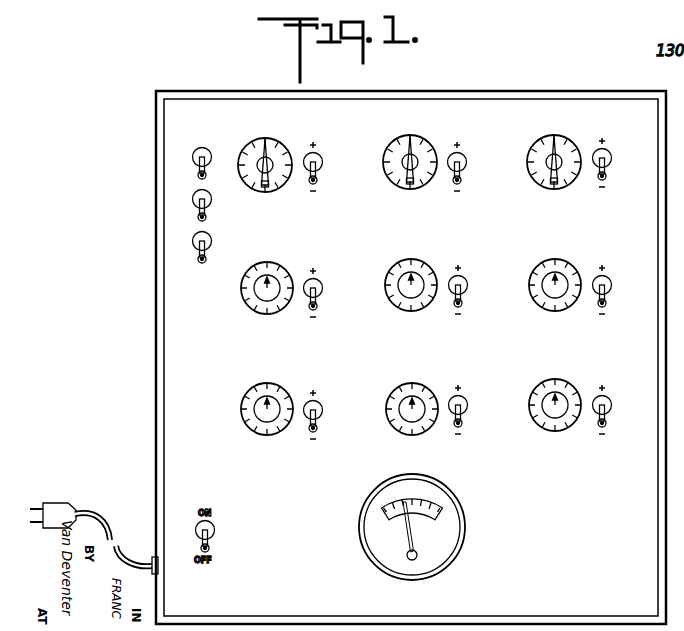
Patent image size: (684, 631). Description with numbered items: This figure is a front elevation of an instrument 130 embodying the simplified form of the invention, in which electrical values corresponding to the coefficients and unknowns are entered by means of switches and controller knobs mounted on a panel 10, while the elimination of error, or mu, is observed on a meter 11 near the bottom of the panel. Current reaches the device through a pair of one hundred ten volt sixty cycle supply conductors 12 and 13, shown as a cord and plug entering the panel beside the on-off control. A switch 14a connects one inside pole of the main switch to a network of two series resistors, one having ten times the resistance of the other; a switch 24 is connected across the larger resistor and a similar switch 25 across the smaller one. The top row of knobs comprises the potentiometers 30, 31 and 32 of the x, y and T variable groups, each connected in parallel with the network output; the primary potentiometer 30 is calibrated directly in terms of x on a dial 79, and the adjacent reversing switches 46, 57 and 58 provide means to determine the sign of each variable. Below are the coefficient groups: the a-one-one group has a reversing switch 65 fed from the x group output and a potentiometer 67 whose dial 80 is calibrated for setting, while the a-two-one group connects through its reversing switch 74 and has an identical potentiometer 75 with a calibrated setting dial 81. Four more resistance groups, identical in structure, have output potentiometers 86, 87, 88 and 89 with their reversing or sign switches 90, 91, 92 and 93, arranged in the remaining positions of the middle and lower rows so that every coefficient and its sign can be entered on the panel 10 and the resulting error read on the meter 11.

The measuring apparatus 130 is at (392, 357).
The panel 10 is at (157, 291).
The meter 11 is at (462, 535).
The supply conductor 12 is at (41, 525).
The supply conductor 13 is at (31, 507).
The switch 14a is at (206, 258).
The switch 24 is at (212, 200).
The switch 25 is at (203, 147).
The potentiometer 30 is at (268, 160).
The potentiometer 31 is at (410, 161).
The potentiometer 32 is at (558, 159).
The reversing switch 46 is at (314, 162).
The reversing switch 57 is at (462, 162).
The reversing switch 58 is at (607, 158).
The reversing switch 65 is at (316, 286).
The potentiometer 67 is at (270, 281).
The reversing switch 74 is at (316, 409).
The potentiometer 75 is at (280, 414).
The dial 79 is at (268, 167).
The dial 80 is at (272, 291).
The calibrated setting dial 81 is at (280, 393).
The output potentiometer 86 is at (400, 290).
The output potentiometer 87 is at (400, 413).
The output potentiometer 88 is at (560, 283).
The output potentiometer 89 is at (552, 424).
The reversing or sign switch 90 is at (462, 285).
The reversing or sign switch 91 is at (462, 404).
The reversing or sign switch 92 is at (607, 287).
The reversing or sign switch 93 is at (608, 407).